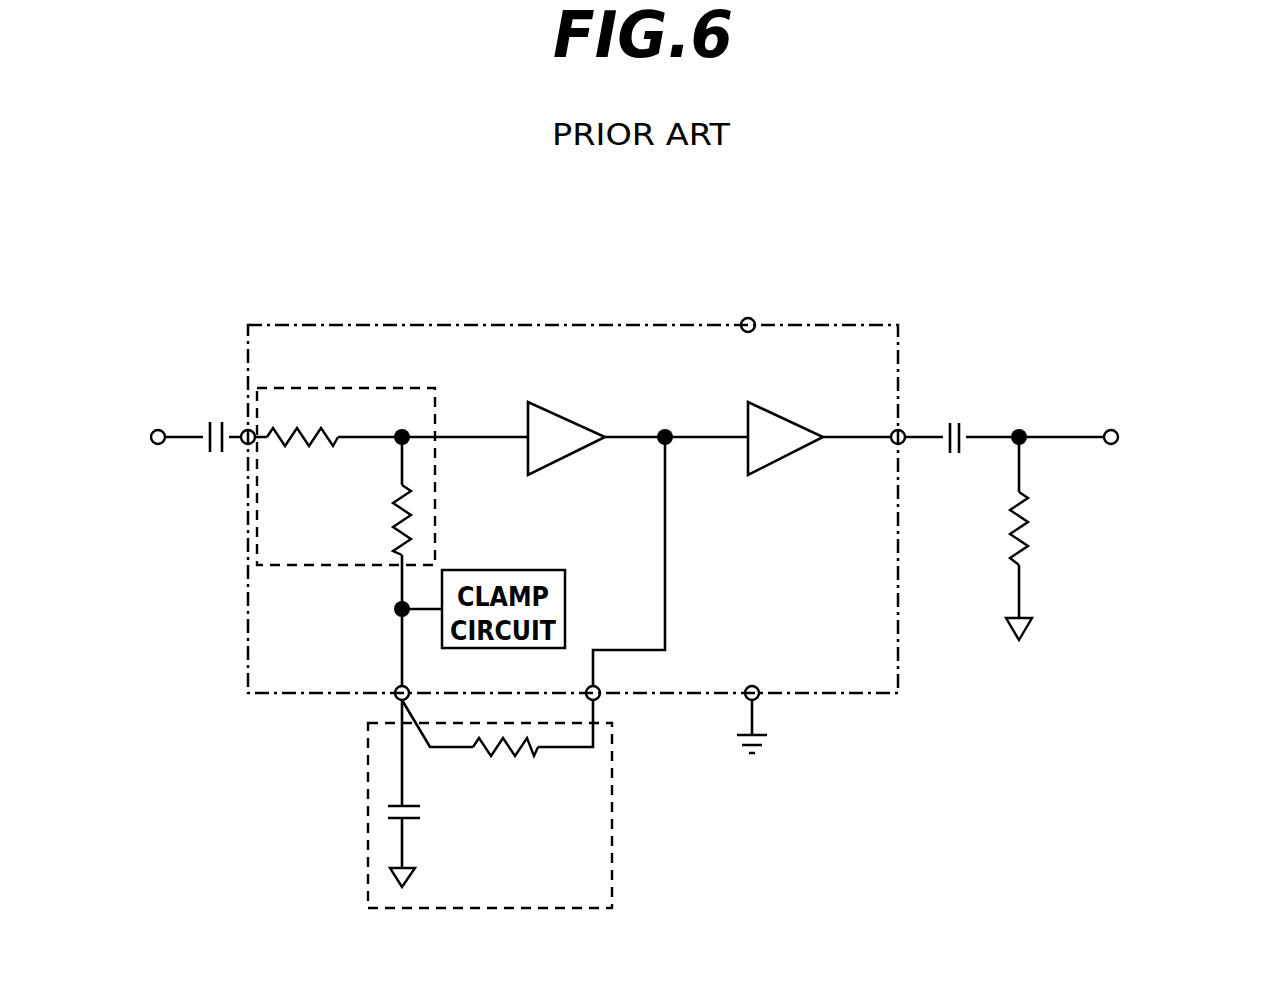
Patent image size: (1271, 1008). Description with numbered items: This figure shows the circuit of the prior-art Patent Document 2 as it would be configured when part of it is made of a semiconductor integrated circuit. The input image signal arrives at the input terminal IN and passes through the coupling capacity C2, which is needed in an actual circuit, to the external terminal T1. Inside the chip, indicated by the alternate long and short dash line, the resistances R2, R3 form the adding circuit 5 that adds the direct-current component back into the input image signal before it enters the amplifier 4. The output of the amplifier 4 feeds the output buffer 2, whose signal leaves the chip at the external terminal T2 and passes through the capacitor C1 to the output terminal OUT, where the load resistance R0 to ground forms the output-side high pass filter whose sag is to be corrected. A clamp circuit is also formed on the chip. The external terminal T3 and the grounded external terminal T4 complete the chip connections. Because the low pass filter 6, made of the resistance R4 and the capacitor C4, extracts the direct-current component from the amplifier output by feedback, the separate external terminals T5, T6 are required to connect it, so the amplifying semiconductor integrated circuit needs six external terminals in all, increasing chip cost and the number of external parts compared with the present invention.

The input terminal IN is at (156, 430).
The external terminal T1 is at (244, 430).
The coupling capacity C2 is at (215, 460).
The resistance R2 is at (302, 463).
The resistance R3 is at (378, 520).
The adding circuit 5 is at (437, 412).
The amplifier 4 is at (565, 413).
The output buffer 2 is at (783, 412).
The external terminal T3 is at (754, 318).
The external terminal T2 is at (904, 430).
The capacitor C1 is at (953, 464).
The output terminal OUT is at (1114, 430).
The load resistance R0 is at (1046, 528).
The external terminal T5 is at (396, 699).
The external terminal T6 is at (600, 700).
The external terminal T4 is at (758, 700).
The resistance R4 is at (505, 770).
The capacitor C4 is at (425, 819).
The low pass filter 6 is at (613, 833).